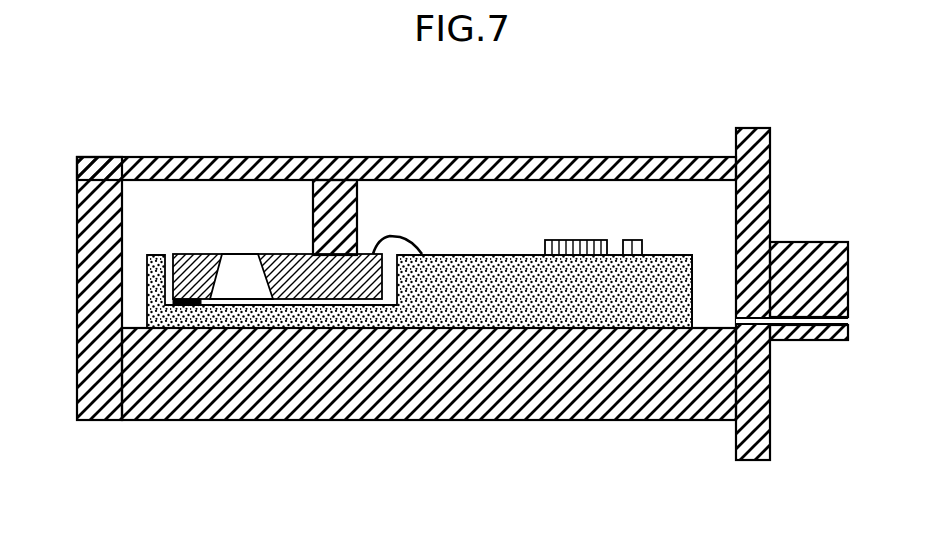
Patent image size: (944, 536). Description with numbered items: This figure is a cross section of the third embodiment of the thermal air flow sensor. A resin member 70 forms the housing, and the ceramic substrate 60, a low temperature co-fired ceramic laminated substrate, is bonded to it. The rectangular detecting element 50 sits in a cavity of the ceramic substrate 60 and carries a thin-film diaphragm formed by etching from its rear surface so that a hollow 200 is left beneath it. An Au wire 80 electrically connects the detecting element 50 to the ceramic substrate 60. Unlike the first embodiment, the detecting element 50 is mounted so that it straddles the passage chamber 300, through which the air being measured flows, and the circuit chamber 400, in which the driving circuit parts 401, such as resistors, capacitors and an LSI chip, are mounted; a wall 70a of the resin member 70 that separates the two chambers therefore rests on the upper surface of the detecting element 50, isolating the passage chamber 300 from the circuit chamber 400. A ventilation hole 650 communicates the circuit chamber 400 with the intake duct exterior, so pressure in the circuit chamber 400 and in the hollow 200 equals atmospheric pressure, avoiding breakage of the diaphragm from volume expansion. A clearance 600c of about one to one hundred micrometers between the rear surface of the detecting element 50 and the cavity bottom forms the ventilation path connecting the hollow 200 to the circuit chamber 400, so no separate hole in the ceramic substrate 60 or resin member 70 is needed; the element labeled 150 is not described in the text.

The resin member 70 is at (419, 368).
The wall of resin part 70a is at (338, 202).
The passage chamber 300 is at (175, 208).
The clearance 600c is at (332, 303).
The ceramic substrate 60 is at (522, 310).
The circuit chamber 400 is at (488, 222).
The driving circuit parts 401 is at (577, 240).
The detecting element 50 is at (287, 258).
The hollow 200 is at (250, 283).
The bonding layer 150 is at (188, 302).
The Au wire 80 is at (393, 236).
The ventilation hole 650 is at (800, 320).